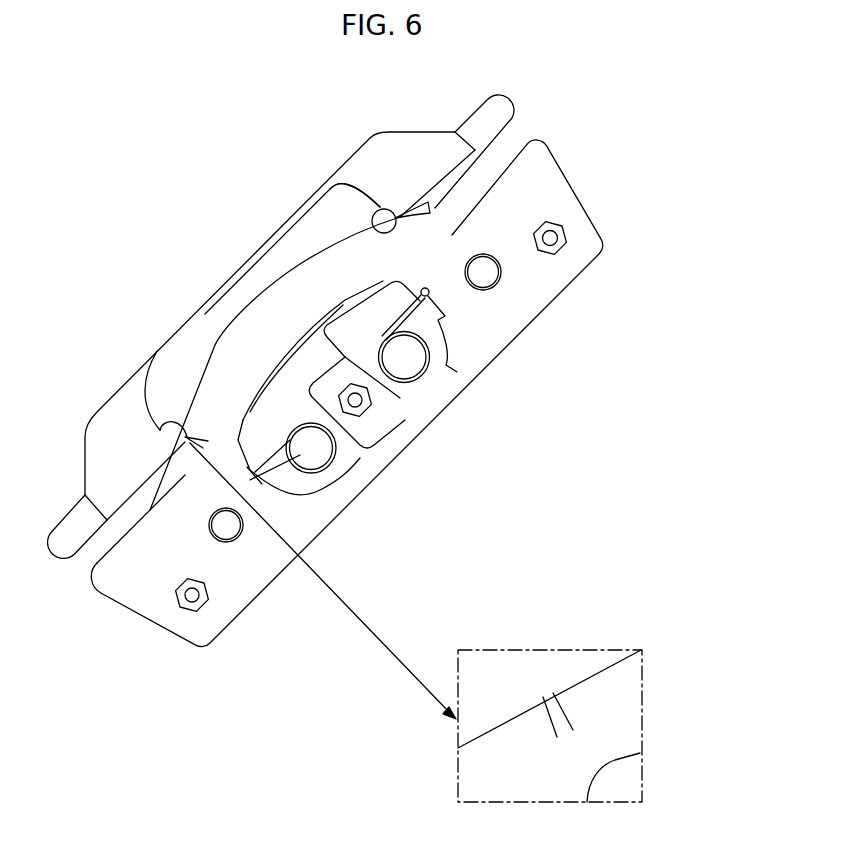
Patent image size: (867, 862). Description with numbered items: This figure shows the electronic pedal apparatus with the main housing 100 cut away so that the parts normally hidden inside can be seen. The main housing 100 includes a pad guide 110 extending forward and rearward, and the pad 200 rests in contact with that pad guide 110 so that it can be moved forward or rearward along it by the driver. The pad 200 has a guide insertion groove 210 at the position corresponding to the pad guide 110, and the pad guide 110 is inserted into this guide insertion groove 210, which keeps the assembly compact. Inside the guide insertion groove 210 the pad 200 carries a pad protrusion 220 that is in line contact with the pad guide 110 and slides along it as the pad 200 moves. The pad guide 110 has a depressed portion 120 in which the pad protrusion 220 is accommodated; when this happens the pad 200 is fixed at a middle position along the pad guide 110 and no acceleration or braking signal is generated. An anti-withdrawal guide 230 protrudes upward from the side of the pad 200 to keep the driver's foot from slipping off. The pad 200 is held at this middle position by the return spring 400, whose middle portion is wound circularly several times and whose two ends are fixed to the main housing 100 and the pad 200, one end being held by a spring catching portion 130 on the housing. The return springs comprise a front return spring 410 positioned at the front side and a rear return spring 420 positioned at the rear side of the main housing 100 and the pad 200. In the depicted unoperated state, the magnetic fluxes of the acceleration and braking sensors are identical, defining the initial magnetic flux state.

The main housing 100 is at (205, 628).
The pad guide 110 is at (298, 290).
The depressed portion 120 is at (190, 437).
The spring catching portion 130 is at (427, 296).
The pad 200 is at (255, 256).
The guide insertion groove 210 is at (343, 217).
The pad protrusion 220 is at (380, 230).
The anti-withdrawal guide 230 is at (103, 405).
The return spring 400 is at (417, 390).
The front return spring 410 is at (435, 366).
The rear return spring 420 is at (330, 463).